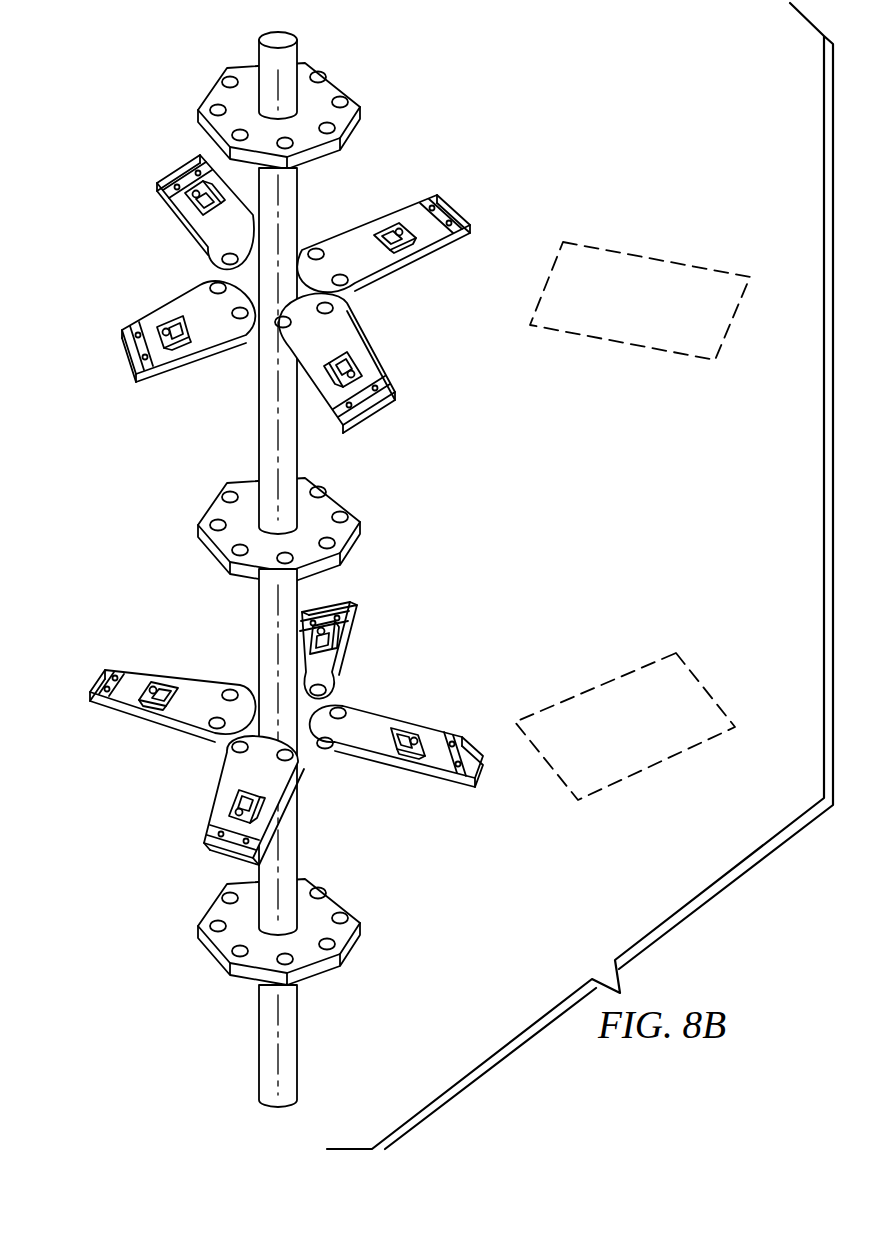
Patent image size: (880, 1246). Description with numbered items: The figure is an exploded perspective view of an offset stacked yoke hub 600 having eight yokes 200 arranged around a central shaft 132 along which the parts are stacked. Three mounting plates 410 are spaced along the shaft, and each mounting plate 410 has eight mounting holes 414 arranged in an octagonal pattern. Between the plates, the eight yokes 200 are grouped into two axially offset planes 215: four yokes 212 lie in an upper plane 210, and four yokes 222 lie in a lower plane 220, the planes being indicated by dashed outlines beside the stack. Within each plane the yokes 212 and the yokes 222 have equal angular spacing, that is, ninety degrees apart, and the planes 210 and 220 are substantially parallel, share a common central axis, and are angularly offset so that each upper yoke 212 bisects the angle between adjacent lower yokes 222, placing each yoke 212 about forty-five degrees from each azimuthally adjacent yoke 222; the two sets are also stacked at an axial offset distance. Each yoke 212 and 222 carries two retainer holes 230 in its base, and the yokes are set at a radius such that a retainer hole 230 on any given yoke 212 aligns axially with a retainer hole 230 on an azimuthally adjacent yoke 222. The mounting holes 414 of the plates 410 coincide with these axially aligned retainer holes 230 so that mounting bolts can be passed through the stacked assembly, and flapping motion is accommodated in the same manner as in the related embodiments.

The offset stacked yoke hub 600 is at (536, 115).
The rod 132 is at (261, 406).
The mounting plate 410 is at (338, 83).
The mounting hole 414 is at (229, 78).
The yoke 200 is at (269, 510).
The yoke 212 is at (192, 226).
The yoke 222 is at (344, 638).
The retainer hole 230 is at (318, 252).
The axially offset plane 215 is at (634, 509).
The upper plane 210 is at (628, 277).
The lower plane 220 is at (640, 689).